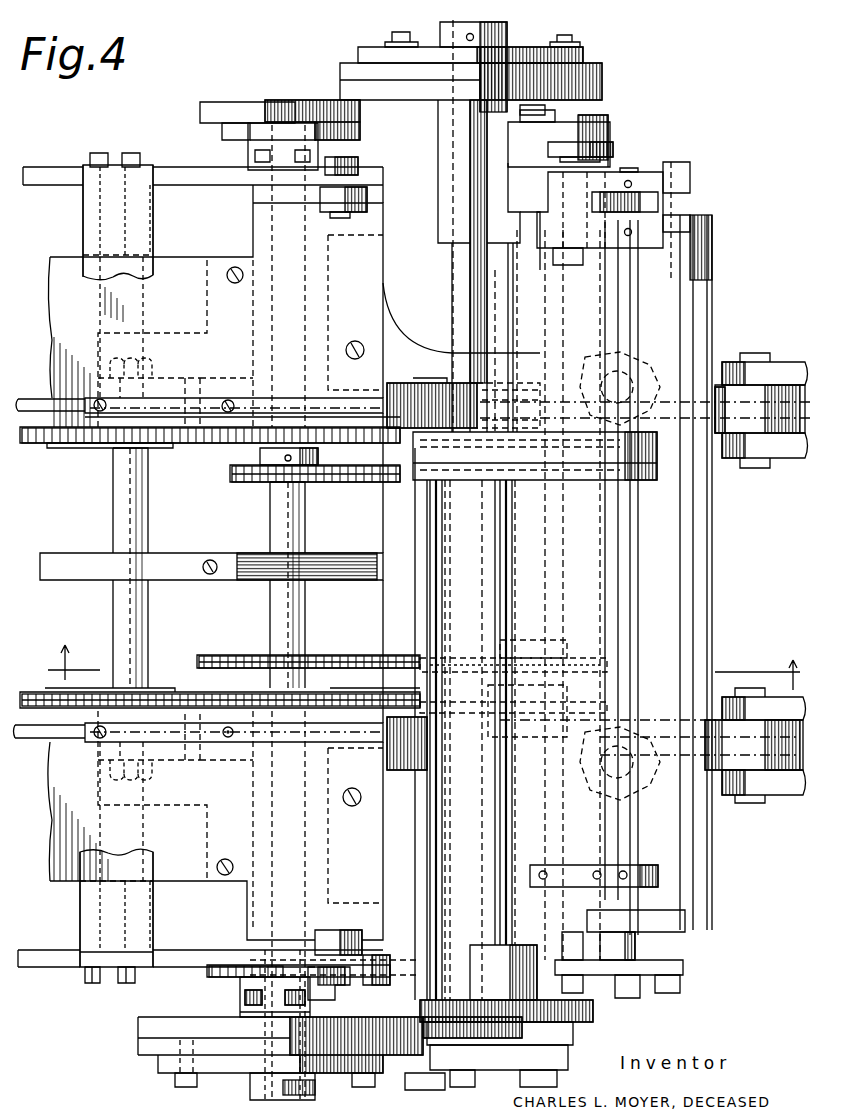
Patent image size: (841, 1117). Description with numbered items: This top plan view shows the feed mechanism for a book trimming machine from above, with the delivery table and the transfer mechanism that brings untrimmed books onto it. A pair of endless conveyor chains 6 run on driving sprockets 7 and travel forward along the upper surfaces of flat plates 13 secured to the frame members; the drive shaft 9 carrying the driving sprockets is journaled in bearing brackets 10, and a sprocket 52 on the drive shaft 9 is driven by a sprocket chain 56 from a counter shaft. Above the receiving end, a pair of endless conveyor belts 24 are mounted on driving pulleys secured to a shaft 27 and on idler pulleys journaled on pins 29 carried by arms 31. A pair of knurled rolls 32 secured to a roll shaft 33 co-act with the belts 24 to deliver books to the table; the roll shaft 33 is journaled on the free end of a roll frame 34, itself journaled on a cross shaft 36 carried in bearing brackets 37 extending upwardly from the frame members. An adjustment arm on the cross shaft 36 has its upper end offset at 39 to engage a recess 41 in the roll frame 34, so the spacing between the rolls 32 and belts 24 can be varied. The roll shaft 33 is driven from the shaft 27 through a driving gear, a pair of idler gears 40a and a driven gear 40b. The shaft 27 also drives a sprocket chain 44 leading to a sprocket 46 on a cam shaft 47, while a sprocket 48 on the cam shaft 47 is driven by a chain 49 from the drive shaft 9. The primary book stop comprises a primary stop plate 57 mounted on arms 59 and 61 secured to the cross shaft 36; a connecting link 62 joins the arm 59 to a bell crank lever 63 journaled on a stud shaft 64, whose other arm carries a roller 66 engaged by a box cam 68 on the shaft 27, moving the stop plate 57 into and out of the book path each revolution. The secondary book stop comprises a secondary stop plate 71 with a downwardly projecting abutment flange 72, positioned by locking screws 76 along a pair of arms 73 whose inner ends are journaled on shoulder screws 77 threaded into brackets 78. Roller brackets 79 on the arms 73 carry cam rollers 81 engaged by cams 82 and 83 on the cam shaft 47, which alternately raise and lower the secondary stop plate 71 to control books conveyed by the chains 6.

The endless conveyor chains 6 is at (32, 446).
The driving sprockets 7 is at (590, 482).
The drive shaft 9 is at (545, 600).
The bearing brackets 10 is at (207, 308).
The flat plates 13 is at (62, 258).
The endless conveyor belts 24 is at (716, 425).
The shaft 27 is at (452, 270).
The pins 29 is at (725, 360).
The arms 31 is at (780, 368).
The knurled rolls 32 is at (400, 385).
The roll shaft 33 is at (423, 598).
The roll frame 34 is at (470, 626).
The cross shaft 36 is at (640, 568).
The bearing brackets 37 is at (665, 200).
The offset 39 is at (637, 945).
The idler gears 40a is at (593, 1012).
The driven gear 40b is at (418, 1090).
The recess 41 is at (630, 920).
The sprocket chain 44 is at (378, 980).
The sprocket 46 is at (212, 977).
The cam shaft 47 is at (275, 598).
The sprocket 48 is at (262, 482).
The chain 49 is at (372, 484).
The sprocket 52 is at (590, 657).
The sprocket chain 56 is at (240, 637).
The primary stop plate 57 is at (683, 610).
The arm 59 is at (650, 250).
The arm 61 is at (700, 795).
The connecting link 62 is at (613, 152).
The bell crank lever 63 is at (610, 128).
The stud shaft 64 is at (440, 205).
The roller 66 is at (520, 90).
The box cam 68 is at (603, 82).
The secondary stop plate 71 is at (74, 207).
The abutment flange 72 is at (150, 225).
The arms 73 is at (43, 170).
The locking screws 76 is at (130, 152).
The shoulder screws 77 is at (360, 165).
The brackets 78 is at (368, 195).
The roller brackets 79 is at (258, 122).
The cam rollers 81 is at (290, 105).
The cam 82 is at (200, 110).
The cam 83 is at (138, 1025).